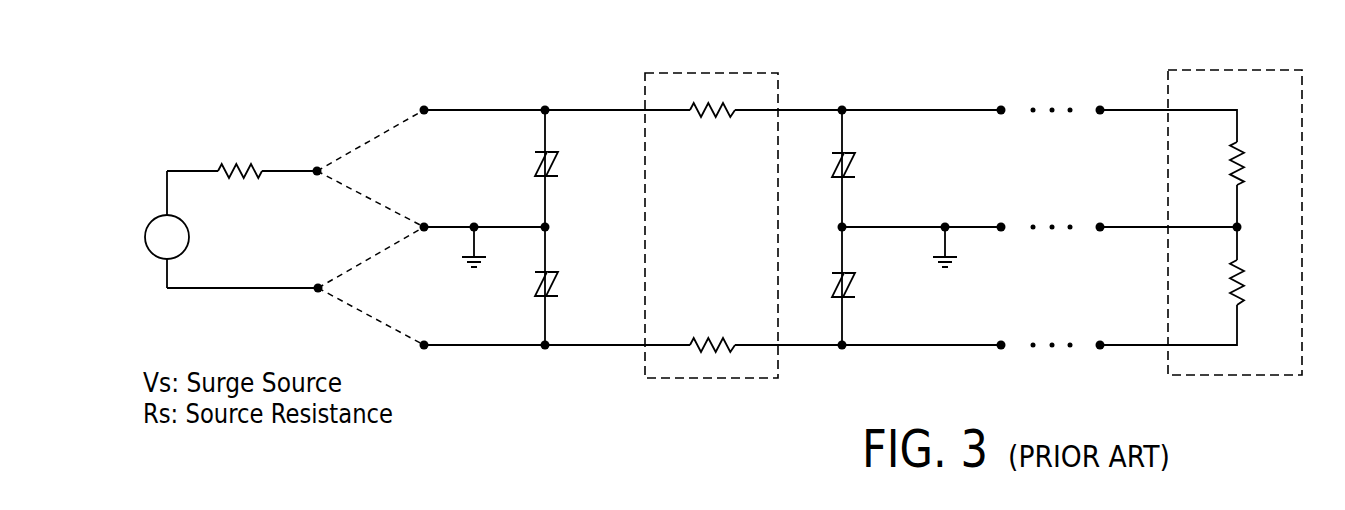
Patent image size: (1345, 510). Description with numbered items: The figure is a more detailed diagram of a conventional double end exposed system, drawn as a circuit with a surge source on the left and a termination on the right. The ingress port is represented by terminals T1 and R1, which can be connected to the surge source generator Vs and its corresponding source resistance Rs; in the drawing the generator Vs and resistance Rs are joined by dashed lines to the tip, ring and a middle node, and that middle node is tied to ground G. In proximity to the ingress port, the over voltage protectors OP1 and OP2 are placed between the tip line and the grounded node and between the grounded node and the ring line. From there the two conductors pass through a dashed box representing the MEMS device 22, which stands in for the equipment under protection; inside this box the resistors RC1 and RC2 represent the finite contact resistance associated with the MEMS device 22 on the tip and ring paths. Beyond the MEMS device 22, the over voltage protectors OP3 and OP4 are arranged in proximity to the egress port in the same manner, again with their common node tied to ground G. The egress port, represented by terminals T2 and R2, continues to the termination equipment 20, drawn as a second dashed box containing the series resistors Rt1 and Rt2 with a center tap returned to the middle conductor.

The termination equipment 20 is at (1163, 95).
The MEMS device 22 is at (778, 98).
The surge source generator Vs is at (162, 224).
The source resistance Rs is at (240, 156).
The ingress port terminal T1 is at (555, 98).
The ingress port terminal R1 is at (555, 333).
The egress port terminal T2 is at (984, 95).
The egress port terminal R2 is at (985, 331).
The ground G is at (710, 261).
The over voltage protector OP1 is at (571, 167).
The over voltage protector OP2 is at (571, 285).
The over voltage protector OP3 is at (867, 165).
The over voltage protector OP4 is at (867, 285).
The contact resistance resistor RC1 is at (713, 128).
The contact resistance resistor RC2 is at (713, 327).
The termination resistor Rt1 is at (1260, 163).
The termination resistor Rt2 is at (1260, 282).